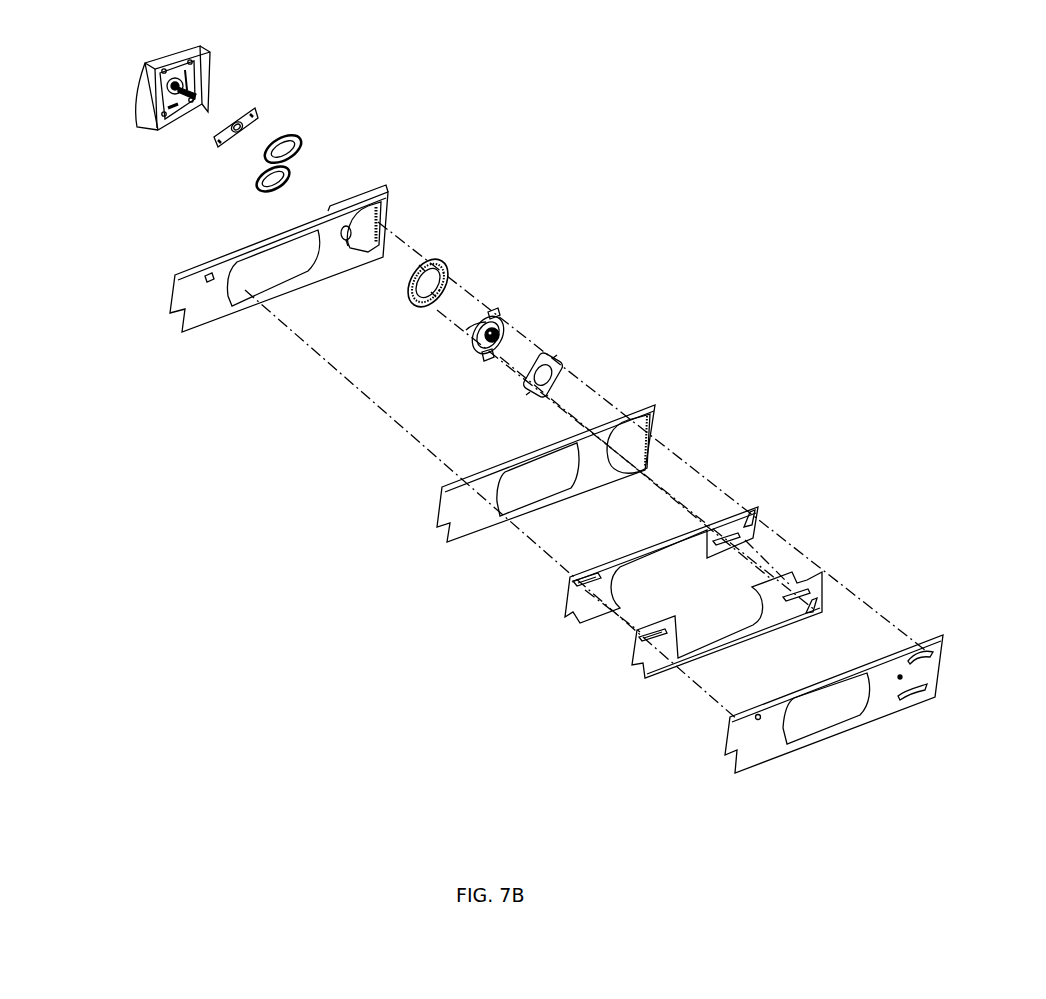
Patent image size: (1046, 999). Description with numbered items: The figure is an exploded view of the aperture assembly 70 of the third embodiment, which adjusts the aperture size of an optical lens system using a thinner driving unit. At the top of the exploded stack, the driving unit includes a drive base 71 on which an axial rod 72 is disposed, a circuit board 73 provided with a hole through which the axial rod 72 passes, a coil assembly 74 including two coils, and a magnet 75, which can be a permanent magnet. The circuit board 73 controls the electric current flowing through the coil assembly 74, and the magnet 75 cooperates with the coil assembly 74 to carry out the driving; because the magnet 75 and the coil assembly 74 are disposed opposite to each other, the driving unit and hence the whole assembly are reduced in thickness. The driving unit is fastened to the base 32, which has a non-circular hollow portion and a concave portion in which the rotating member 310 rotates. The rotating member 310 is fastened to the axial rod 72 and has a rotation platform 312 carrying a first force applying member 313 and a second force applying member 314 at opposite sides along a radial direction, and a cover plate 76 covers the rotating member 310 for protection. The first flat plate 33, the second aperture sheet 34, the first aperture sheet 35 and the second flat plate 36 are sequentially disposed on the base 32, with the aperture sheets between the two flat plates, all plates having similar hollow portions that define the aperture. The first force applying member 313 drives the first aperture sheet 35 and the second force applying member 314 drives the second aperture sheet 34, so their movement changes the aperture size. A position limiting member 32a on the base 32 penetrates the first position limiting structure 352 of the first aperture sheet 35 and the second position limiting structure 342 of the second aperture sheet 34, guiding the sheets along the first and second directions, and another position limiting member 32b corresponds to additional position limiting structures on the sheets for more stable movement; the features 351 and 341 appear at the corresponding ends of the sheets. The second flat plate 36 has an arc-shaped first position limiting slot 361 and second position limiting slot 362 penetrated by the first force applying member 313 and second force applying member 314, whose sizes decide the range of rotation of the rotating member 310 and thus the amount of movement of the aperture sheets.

The aperture assembly 70 is at (92, 158).
The drive base 71 is at (205, 50).
The axial rod 72 is at (200, 95).
The circuit board 73 is at (258, 117).
The coil assembly 74 is at (297, 146).
The base 32 is at (274, 289).
The position limiting member 32a is at (210, 274).
The position limiting member 32b is at (348, 240).
The magnet 75 is at (437, 258).
The rotating member 310 is at (499, 329).
The rotation platform 312 is at (505, 335).
The first force applying member 313 is at (490, 357).
The second force applying member 314 is at (502, 318).
The cover plate 76 is at (562, 362).
The first flat plate 33 is at (467, 540).
The second aperture sheet 34 is at (648, 574).
The hook 341 is at (752, 508).
The second position limiting structure 342 is at (573, 588).
The first aperture sheet 35 is at (726, 659).
The hook 351 is at (816, 603).
The first position limiting structure 352 is at (640, 647).
The second flat plate 36 is at (833, 712).
The first position limiting slot 361 is at (912, 698).
The second position limiting slot 362 is at (925, 645).